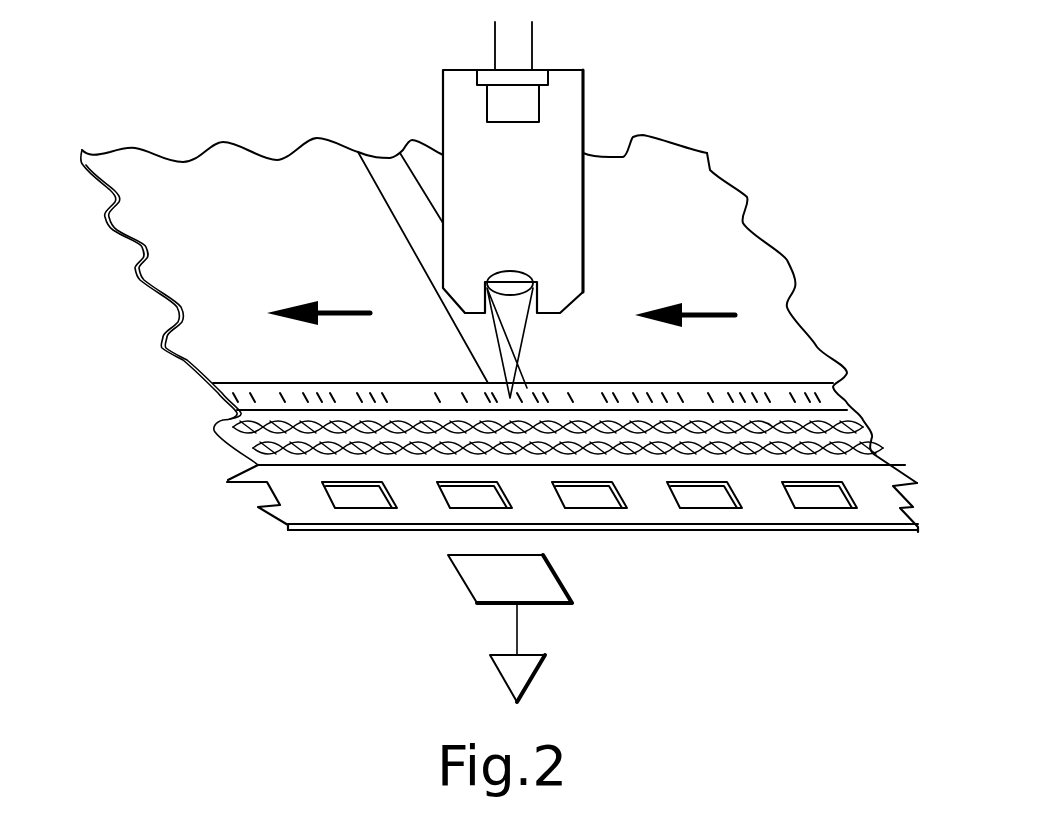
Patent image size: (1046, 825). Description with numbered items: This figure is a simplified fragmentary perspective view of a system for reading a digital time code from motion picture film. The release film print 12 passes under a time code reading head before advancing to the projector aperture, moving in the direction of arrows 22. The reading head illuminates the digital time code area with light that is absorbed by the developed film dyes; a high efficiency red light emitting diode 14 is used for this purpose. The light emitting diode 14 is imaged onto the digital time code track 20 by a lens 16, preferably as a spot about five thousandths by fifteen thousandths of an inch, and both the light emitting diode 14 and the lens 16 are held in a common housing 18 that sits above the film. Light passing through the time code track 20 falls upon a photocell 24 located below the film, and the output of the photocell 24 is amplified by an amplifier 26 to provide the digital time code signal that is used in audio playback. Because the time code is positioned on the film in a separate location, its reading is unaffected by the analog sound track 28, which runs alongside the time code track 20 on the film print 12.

The release film print 12 is at (800, 265).
The light emitting diode 14 is at (487, 108).
The lens 16 is at (523, 268).
The common housing 18 is at (582, 90).
The digital time code track 20 is at (808, 397).
The arrows 22 is at (352, 312).
The photocell 24 is at (560, 578).
The amplifier 26 is at (533, 682).
The analog sound track 28 is at (878, 440).